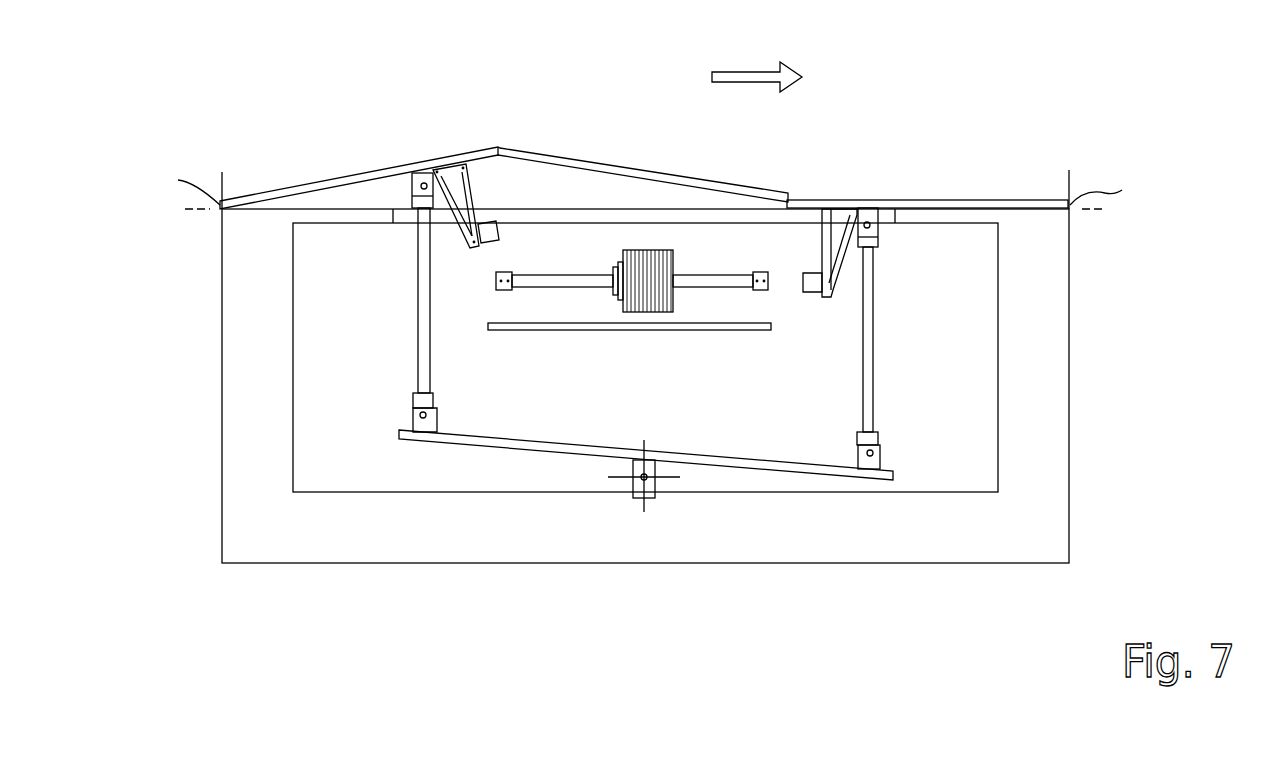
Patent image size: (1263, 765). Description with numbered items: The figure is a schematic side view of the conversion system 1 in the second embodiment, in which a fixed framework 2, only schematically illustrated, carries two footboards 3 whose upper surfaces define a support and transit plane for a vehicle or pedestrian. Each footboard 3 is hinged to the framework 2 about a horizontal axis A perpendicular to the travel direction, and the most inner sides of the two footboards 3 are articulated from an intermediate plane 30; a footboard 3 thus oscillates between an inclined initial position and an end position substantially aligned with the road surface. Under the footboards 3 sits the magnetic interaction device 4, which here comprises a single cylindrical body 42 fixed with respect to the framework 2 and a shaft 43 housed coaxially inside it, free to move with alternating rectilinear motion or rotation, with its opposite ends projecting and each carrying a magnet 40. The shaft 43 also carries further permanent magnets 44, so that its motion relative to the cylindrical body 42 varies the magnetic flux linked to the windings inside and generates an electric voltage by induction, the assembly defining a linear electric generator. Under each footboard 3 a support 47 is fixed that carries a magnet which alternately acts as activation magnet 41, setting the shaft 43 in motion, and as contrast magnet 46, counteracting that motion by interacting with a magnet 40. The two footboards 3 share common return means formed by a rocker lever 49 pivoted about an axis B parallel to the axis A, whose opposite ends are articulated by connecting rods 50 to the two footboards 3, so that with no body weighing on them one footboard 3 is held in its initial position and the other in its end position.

The system 1 is at (1132, 110).
The fixed framework 2 is at (1000, 350).
The footboard 3 is at (366, 172).
The magnetic interaction device 4 is at (689, 237).
The intermediate plane 30 is at (588, 157).
The magnet 40 is at (496, 290).
The activation magnet 41 is at (497, 228).
The cylindrical body 42 is at (657, 312).
The shaft 43 is at (552, 282).
The permanent magnets 44 is at (613, 300).
The contrast magnet 46 is at (810, 292).
The support 47 is at (458, 232).
The rocker lever 49 is at (508, 447).
The connecting rods 50 is at (424, 354).
The axis A is at (652, 183).
The axis B is at (649, 483).